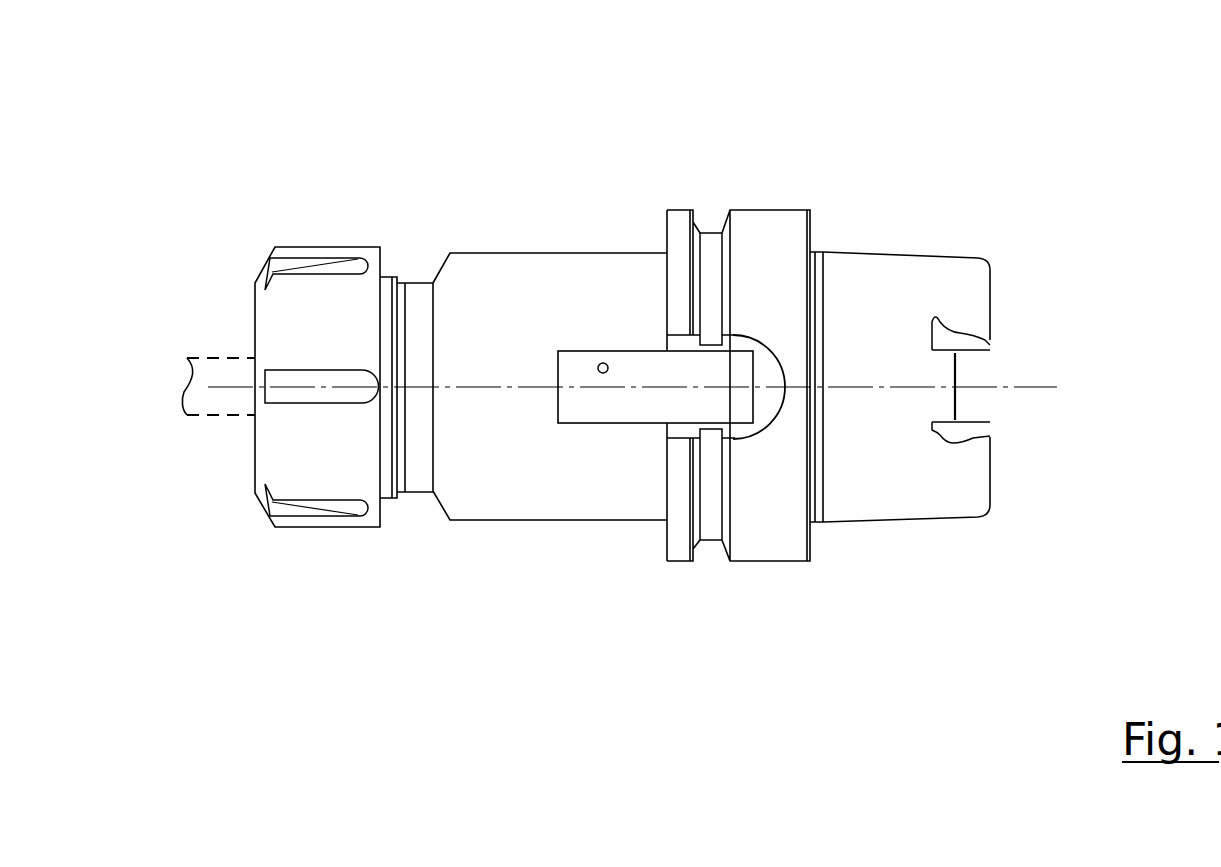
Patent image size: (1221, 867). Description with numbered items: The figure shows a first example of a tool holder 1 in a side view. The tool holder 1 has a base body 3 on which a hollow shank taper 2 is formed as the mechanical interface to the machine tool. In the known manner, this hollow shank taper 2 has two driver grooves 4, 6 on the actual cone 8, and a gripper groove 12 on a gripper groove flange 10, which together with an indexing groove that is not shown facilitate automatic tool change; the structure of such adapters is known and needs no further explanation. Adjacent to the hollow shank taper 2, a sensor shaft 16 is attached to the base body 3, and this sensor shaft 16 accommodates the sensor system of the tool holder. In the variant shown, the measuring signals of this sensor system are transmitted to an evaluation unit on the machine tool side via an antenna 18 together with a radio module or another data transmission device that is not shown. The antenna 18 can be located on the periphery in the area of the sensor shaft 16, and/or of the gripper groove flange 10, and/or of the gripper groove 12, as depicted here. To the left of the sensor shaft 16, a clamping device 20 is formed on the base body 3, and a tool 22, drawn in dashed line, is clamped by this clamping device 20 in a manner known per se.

The tool holder 1 is at (592, 196).
The hollow shank taper 2 is at (856, 214).
The base body 3 is at (462, 247).
The driver groove 4 is at (957, 368).
The driver groove 6 is at (938, 405).
The cone 8 is at (965, 495).
The gripper groove flange 10 is at (753, 533).
The gripper groove 12 is at (700, 553).
The sensor shaft 16 is at (530, 507).
The antenna 18 is at (603, 362).
The clamping device 20 is at (317, 540).
The tool 22 is at (217, 370).